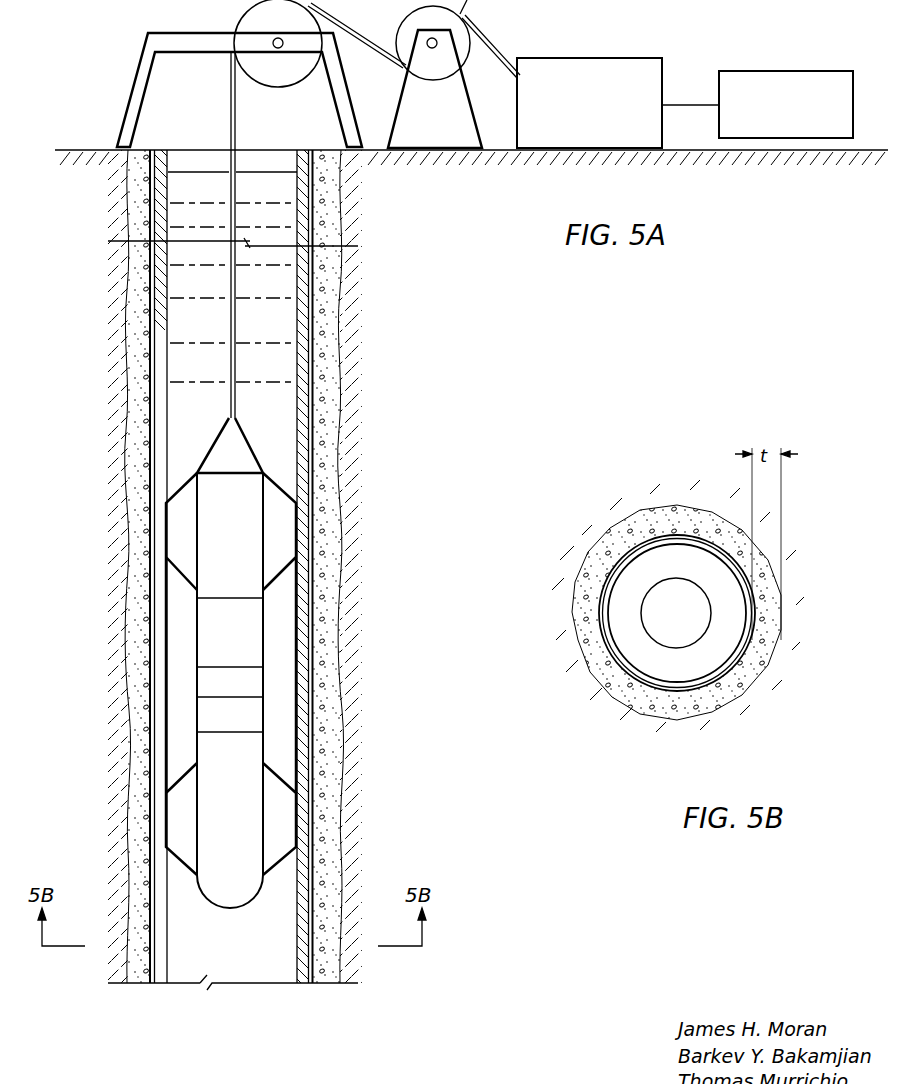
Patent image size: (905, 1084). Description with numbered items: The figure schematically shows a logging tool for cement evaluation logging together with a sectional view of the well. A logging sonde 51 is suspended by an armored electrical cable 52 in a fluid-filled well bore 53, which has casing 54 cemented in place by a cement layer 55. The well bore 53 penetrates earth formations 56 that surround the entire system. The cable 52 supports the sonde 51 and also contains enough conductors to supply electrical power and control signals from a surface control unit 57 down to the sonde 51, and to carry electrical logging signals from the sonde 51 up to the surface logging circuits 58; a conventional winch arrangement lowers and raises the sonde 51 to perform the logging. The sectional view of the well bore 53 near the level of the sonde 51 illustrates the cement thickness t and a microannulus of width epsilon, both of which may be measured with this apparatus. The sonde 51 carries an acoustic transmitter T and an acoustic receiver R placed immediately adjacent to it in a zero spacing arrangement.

In FIG. 5A, the logging sonde 51 is at (248, 502).
In FIG. 5B, the logging sonde 51 is at (683, 632).
In FIG. 5A, the armored electrical cable 52 is at (238, 325).
In FIG. 5A, the well bore 53 is at (282, 398).
In FIG. 5A, the casing 54 is at (310, 580).
In FIG. 5B, the casing 54 is at (618, 548).
In FIG. 5A, the cement layer 55 is at (325, 762).
In FIG. 5B, the cement layer 55 is at (640, 520).
In FIG. 5A, the earth formations 56 is at (340, 862).
In FIG. 5B, the earth formations 56 is at (588, 690).
In FIG. 5A, the surface control unit 57 is at (626, 58).
In FIG. 5A, the surface logging circuits 58 is at (783, 71).